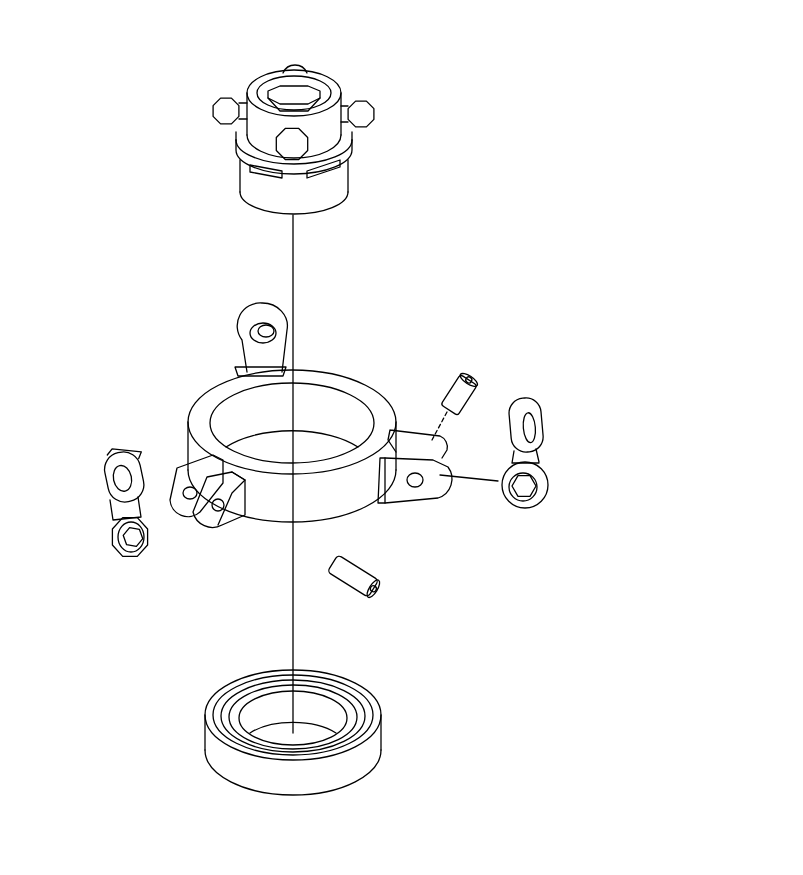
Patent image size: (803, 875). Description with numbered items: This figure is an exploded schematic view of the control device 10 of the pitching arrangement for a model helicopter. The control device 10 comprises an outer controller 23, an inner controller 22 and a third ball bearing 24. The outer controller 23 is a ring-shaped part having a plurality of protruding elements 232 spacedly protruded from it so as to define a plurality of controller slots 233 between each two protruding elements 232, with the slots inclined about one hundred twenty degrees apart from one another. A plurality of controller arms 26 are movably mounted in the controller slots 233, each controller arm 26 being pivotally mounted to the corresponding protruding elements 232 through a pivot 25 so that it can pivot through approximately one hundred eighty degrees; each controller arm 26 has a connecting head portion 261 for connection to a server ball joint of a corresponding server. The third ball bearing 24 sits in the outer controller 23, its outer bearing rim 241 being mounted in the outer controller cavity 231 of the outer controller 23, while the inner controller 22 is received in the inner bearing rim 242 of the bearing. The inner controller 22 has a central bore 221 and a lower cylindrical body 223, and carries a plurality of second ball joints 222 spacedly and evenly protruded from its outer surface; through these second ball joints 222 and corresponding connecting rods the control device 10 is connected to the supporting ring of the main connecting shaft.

The control device 10 is at (140, 293).
The inner controller 22 is at (333, 165).
The central bore 221 is at (303, 97).
The second ball joints 222 is at (298, 143).
The lower cylindrical body 223 is at (250, 183).
The outer controller 23 is at (365, 387).
The outer controller cavity 231 is at (270, 415).
The protruding elements 232 is at (207, 467).
The controller slots 233 is at (203, 480).
The bearing 24 is at (358, 725).
The outer bearing rim 241 is at (243, 768).
The inner bearing rim 242 is at (262, 720).
The pivots 25 is at (217, 507).
The controller arms 26 is at (535, 457).
The connecting head portion 261 is at (100, 540).